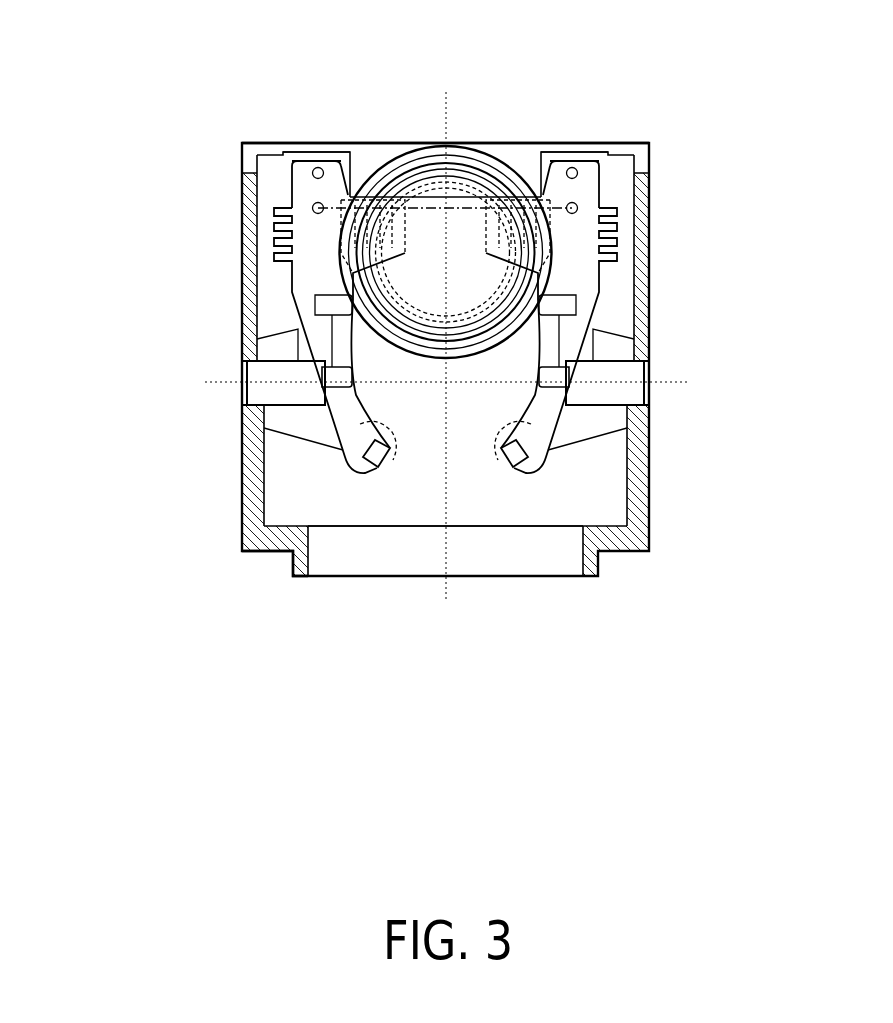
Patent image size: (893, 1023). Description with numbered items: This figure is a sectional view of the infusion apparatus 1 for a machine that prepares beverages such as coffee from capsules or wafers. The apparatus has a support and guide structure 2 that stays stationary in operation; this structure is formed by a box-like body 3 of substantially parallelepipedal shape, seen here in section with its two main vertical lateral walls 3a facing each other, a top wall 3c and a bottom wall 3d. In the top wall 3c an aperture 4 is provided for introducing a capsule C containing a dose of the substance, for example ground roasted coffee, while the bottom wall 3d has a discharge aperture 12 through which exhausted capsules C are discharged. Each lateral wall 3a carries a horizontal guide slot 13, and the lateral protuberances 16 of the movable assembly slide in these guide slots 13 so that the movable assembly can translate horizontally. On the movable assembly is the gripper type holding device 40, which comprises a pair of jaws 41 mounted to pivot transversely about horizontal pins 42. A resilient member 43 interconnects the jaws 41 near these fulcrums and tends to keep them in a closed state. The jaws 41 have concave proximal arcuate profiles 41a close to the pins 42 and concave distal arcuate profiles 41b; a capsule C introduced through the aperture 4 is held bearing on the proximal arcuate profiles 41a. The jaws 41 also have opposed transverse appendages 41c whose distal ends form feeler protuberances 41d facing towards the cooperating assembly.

The infusion apparatus 1 is at (249, 133).
The support and guide structure 2 is at (240, 268).
The box-like body 3 is at (652, 275).
The lateral walls 3a is at (242, 313).
The top wall 3c is at (330, 141).
The bottom wall 3d is at (278, 552).
The aperture 4 is at (505, 168).
The discharge aperture 12 is at (574, 577).
The guide slots 13 is at (242, 400).
The lateral protuberances 16 is at (246, 390).
The gripper type holding device 40 is at (281, 184).
The jaws 41 is at (291, 207).
The proximal arcuate profiles 41a is at (489, 192).
The distal arcuate profiles 41b is at (383, 477).
The transverse appendages 41c is at (557, 257).
The feeler protuberances 41d is at (490, 257).
The pins 42 is at (318, 167).
The resilient member 43 is at (571, 167).
The capsule C is at (432, 138).